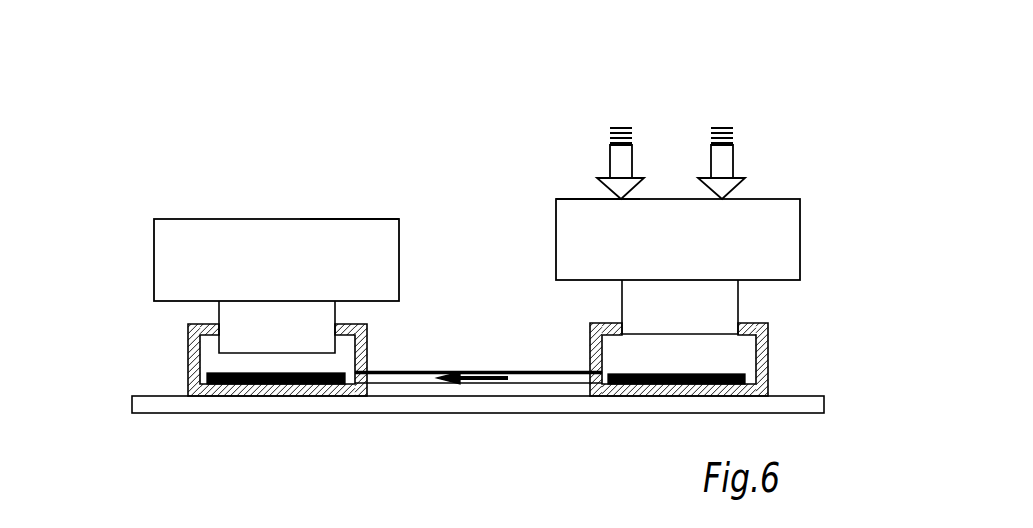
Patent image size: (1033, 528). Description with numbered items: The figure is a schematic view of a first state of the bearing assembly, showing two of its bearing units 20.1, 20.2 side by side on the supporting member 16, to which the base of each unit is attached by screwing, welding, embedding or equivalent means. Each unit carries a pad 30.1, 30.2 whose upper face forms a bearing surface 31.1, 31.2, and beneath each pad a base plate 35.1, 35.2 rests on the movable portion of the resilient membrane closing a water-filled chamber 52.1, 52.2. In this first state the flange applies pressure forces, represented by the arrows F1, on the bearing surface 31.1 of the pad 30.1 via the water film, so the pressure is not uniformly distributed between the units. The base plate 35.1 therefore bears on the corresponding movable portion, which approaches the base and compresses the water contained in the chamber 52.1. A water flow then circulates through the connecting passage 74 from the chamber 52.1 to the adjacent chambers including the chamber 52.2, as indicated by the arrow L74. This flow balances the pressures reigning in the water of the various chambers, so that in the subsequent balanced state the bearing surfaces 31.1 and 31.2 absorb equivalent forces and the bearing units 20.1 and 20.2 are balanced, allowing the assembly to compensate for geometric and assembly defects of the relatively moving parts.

The supporting member 16 is at (143, 401).
The bearing unit 20.1 is at (772, 182).
The bearing unit 20.2 is at (153, 210).
The pad 30.1 is at (678, 239).
The pad 30.2 is at (276, 260).
The bearing surface 31.1 is at (575, 197).
The bearing surface 31.2 is at (337, 217).
The base plate 35.1 is at (680, 307).
The base plate 35.2 is at (277, 327).
The chamber 52.1 is at (725, 352).
The chamber 52.2 is at (213, 362).
The water flow passage 74 is at (522, 378).
The water flow arrow L74 is at (488, 378).
The pressure forces F1 is at (671, 163).